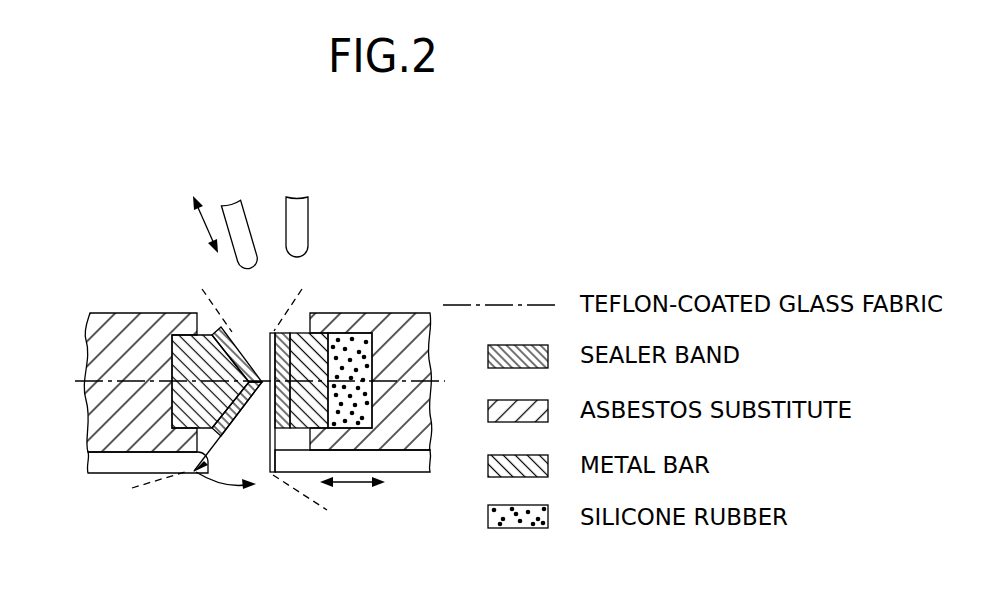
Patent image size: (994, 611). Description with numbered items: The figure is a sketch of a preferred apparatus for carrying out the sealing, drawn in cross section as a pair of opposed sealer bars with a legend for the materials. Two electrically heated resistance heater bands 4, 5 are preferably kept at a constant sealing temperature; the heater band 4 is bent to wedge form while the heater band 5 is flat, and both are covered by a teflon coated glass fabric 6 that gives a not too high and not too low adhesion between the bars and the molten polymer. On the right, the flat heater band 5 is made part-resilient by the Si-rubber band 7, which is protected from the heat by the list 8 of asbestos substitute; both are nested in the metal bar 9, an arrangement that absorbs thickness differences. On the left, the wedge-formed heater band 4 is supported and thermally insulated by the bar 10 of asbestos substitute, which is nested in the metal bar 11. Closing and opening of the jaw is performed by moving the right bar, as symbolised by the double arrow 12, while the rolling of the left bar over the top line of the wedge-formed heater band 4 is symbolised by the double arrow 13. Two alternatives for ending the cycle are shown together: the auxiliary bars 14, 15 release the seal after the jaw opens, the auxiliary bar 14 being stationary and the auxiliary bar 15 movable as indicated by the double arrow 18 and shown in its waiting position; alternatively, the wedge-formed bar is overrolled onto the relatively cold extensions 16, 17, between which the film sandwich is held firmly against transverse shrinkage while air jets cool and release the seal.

The heater band 4 is at (222, 326).
The heater band 5 is at (284, 333).
The teflon coated glass fabric 6 is at (272, 468).
The Si-rubber band 7 is at (340, 334).
The list of asbestos substitute 8 is at (268, 340).
The metal bar 9 is at (398, 322).
The bar of asbestos substitute 10 is at (182, 358).
The metal bar 11 is at (128, 335).
The double arrow 12 is at (350, 485).
The double arrow 13 is at (205, 476).
The auxiliary bar 14 is at (312, 217).
The auxiliary bar 15 is at (253, 213).
The extension 16 is at (405, 463).
The extension 17 is at (118, 460).
The double arrow 18 is at (203, 223).